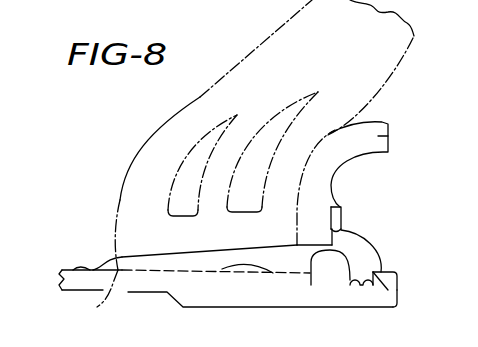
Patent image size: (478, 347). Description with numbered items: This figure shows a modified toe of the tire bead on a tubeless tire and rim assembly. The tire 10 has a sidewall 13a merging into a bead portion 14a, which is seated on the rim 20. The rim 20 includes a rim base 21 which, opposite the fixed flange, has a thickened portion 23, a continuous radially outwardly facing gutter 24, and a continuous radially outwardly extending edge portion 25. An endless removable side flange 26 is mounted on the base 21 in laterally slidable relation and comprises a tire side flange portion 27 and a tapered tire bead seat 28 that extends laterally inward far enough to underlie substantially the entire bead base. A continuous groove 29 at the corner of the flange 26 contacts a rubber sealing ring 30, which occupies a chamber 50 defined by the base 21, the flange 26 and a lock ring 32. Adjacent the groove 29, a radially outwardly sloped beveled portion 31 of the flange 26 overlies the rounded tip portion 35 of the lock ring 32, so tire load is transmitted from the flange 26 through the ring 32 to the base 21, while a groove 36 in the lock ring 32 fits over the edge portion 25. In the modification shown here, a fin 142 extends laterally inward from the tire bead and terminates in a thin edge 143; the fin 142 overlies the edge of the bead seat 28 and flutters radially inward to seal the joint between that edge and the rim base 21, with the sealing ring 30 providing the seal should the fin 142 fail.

The tire 10 is at (423, 38).
The sidewall 13a is at (389, 82).
The bead portion 14a is at (182, 164).
The rim 20 is at (443, 0).
The rim base 21 is at (132, 292).
The thickened portion 23 is at (210, 308).
The gutter 24 is at (355, 286).
The edge portion 25 is at (398, 277).
The removable side flange 26 is at (383, 121).
The tire side flange portion 27 is at (389, 136).
The tapered tire bead seat 28 is at (96, 296).
The groove 29 is at (320, 277).
The sealing ring 30 is at (327, 283).
The beveled portion 31 is at (342, 233).
The lock ring 32 is at (383, 242).
The tip portion 35 is at (343, 205).
The groove 36 is at (398, 296).
The chamber 50 is at (338, 282).
The fin 142 is at (95, 270).
The thin edge 143 is at (82, 270).